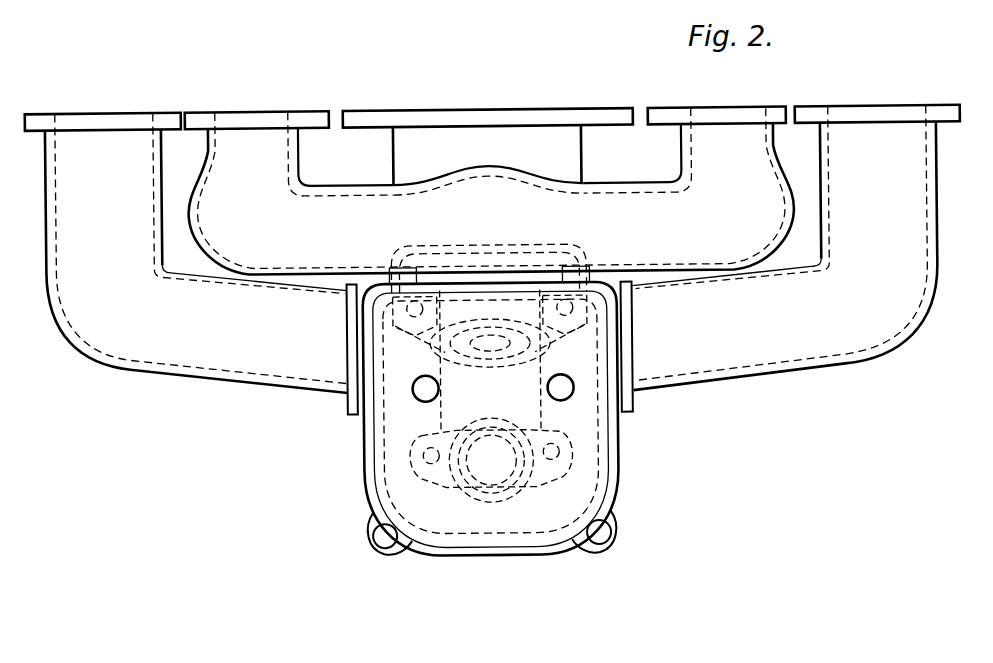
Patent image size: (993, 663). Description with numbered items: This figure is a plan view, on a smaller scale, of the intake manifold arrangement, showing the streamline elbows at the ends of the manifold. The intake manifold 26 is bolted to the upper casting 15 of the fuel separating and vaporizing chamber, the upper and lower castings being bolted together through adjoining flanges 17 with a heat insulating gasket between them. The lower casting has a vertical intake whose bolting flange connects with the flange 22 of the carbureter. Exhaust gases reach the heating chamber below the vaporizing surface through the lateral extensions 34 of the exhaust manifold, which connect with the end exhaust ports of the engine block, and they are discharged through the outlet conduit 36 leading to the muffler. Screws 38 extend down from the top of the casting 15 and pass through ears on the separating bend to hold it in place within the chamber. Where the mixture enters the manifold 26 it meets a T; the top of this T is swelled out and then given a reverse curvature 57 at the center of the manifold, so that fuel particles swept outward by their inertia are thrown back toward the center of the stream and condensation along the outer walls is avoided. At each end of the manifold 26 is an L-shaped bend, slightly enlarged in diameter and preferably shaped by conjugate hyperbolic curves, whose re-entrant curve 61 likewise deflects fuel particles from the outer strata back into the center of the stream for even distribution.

The upper casting 15 is at (617, 486).
The adjoining flanges 17 is at (373, 489).
The carbureter flange 22 is at (598, 461).
The intake manifold conduit 26 is at (354, 214).
The lateral extensions of exhaust manifold 34 is at (252, 363).
The outlet conduit 36 is at (612, 328).
The screws 38 is at (433, 400).
The reverse curvature 57 is at (505, 165).
The re-entrant curve 61 is at (217, 163).